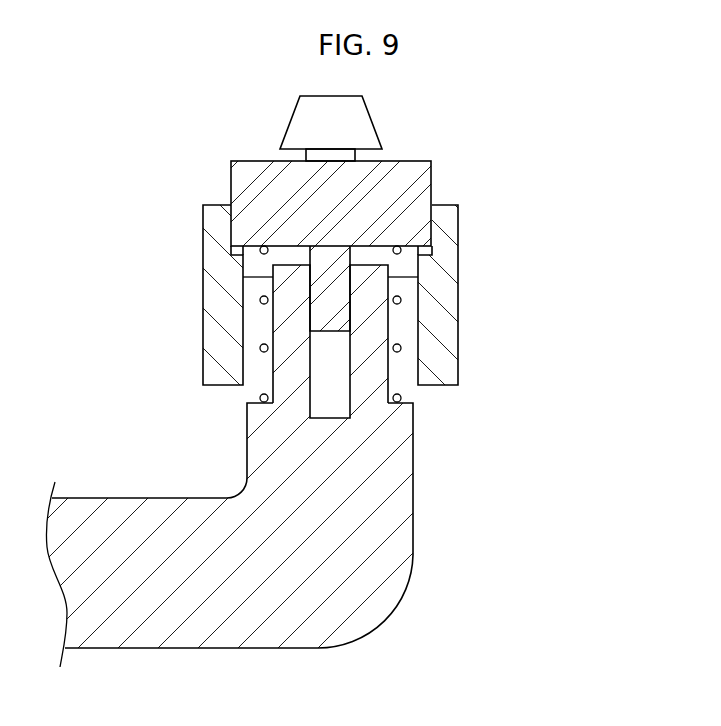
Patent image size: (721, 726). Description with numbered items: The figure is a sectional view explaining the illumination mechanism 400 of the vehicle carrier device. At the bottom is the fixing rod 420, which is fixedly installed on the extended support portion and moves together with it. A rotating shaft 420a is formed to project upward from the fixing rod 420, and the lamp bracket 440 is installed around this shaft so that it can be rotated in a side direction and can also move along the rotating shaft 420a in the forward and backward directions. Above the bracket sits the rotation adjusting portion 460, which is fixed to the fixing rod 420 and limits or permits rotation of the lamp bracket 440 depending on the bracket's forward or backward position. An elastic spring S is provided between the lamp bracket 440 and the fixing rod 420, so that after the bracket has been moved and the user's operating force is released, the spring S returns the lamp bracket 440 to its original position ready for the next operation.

The illumination mechanism 400 is at (534, 210).
The rotation adjusting portion 460 is at (243, 174).
The lamp bracket 440 is at (213, 290).
The fixing rod 420 is at (395, 510).
The rotating shaft 420a is at (290, 324).
The elastic spring S is at (400, 348).